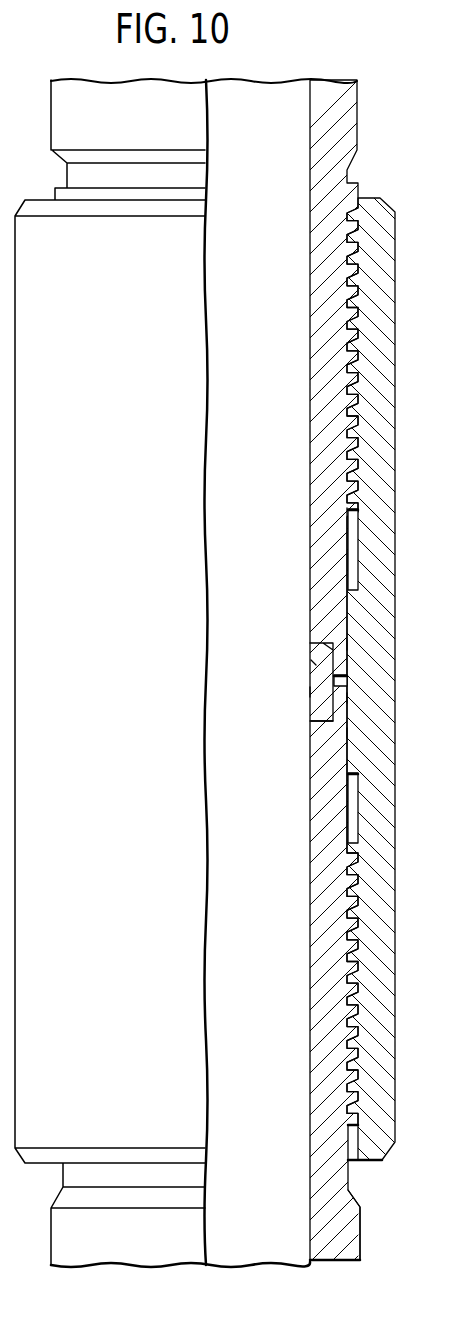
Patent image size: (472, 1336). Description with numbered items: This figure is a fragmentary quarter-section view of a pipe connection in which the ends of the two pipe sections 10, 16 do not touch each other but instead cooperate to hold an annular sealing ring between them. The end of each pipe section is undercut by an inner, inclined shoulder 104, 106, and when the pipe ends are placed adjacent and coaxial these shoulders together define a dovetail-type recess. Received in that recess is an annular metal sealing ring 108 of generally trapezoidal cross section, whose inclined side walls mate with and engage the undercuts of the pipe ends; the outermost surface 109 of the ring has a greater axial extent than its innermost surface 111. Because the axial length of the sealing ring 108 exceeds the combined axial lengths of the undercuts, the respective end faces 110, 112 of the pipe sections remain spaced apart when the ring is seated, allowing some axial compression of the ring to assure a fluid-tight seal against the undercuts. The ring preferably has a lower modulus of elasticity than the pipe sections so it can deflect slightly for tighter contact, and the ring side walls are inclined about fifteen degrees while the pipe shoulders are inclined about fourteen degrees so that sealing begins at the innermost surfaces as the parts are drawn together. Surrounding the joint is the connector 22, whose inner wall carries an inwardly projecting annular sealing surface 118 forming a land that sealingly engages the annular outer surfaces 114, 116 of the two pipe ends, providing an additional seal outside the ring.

The pipe section 10 is at (352, 1230).
The pipe section 16 is at (348, 123).
The connector 22 is at (348, 678).
The inner inclined shoulder 104 is at (341, 677).
The inner inclined shoulder 106 is at (312, 723).
The annular metal sealing ring 108 is at (310, 662).
The outermost surface of ring 109 is at (347, 645).
The end face of pipe section 110 is at (347, 665).
The innermost surface of ring 111 is at (308, 692).
The end face of pipe section 112 is at (347, 698).
The annular outer surface of pipe end 114 is at (347, 605).
The annular outer surface of pipe end 116 is at (340, 763).
The inwardly projecting annular sealing surface 118 is at (348, 733).